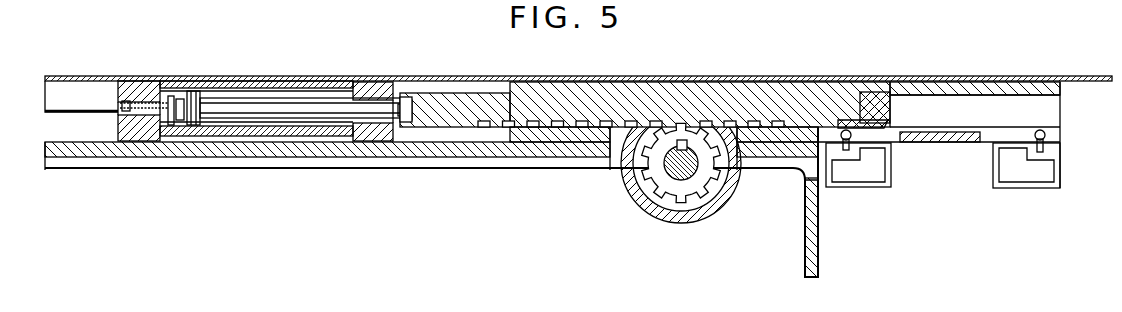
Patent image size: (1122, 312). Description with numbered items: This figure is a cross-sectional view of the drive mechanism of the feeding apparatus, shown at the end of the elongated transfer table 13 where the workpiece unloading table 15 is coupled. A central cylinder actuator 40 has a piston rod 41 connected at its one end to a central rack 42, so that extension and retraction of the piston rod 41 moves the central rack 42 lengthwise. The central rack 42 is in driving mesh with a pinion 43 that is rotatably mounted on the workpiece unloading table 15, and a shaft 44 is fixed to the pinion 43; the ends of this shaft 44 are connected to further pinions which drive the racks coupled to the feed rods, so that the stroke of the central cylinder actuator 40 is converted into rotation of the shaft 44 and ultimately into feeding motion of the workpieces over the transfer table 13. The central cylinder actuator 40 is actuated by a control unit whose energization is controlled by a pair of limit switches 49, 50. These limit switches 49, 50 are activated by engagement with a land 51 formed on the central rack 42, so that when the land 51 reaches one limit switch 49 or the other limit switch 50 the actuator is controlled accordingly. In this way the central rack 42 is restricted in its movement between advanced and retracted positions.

The transfer table 13 is at (89, 152).
The workpiece unloading table 15 is at (1078, 79).
The central cylinder actuator 40 is at (244, 84).
The piston rod 41 is at (381, 101).
The central rack 42 is at (592, 100).
The pinion 43 is at (697, 190).
The shaft 44 is at (670, 176).
The limit switch 49 is at (864, 184).
The limit switch 50 is at (1022, 180).
The land 51 is at (861, 97).